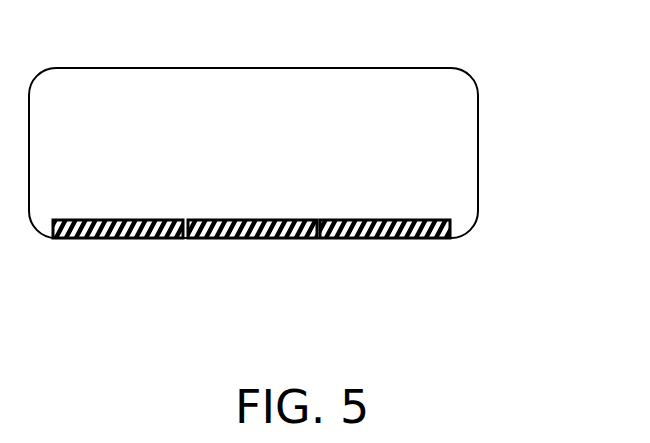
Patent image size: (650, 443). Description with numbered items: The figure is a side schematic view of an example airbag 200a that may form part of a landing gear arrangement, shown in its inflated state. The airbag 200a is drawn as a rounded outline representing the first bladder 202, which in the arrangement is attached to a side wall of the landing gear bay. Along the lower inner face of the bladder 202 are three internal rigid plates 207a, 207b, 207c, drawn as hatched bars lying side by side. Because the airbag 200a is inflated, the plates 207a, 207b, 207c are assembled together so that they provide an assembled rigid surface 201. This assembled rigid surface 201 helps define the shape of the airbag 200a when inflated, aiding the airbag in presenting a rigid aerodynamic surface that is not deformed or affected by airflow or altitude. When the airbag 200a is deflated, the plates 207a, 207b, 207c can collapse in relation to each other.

The airbag 200a is at (500, 67).
The first bladder 202 is at (270, 107).
The assembled rigid surface 201 is at (277, 238).
The internal rigid plate 207a is at (87, 238).
The internal rigid plate 207b is at (215, 238).
The internal rigid plate 207c is at (362, 238).